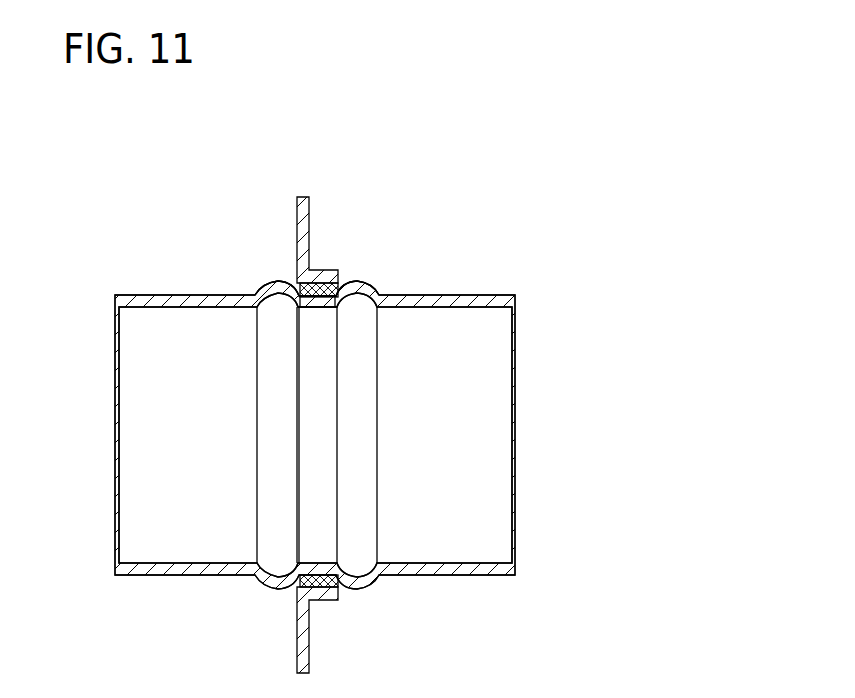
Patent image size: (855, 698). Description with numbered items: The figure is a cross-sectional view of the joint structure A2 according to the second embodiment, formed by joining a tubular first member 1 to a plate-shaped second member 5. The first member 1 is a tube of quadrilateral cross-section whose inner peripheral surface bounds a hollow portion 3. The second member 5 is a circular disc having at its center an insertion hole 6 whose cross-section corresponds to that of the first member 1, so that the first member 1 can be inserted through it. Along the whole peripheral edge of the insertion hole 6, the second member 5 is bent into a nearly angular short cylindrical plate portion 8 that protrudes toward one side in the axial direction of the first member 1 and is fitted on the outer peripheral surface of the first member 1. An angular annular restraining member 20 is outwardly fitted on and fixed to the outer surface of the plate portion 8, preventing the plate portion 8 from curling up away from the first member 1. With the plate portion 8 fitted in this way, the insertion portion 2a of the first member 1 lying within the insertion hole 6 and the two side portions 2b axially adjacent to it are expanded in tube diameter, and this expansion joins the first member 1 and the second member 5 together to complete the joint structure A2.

The first member 1 is at (510, 293).
The insertion portion 2a is at (330, 290).
The side portions 2b is at (282, 283).
The hollow portion 3 is at (482, 438).
The second member 5 is at (302, 197).
The insertion hole 6 is at (291, 580).
The plate portion 8 is at (340, 290).
The restraining member 20 is at (318, 297).
The joint structure A2 is at (553, 250).